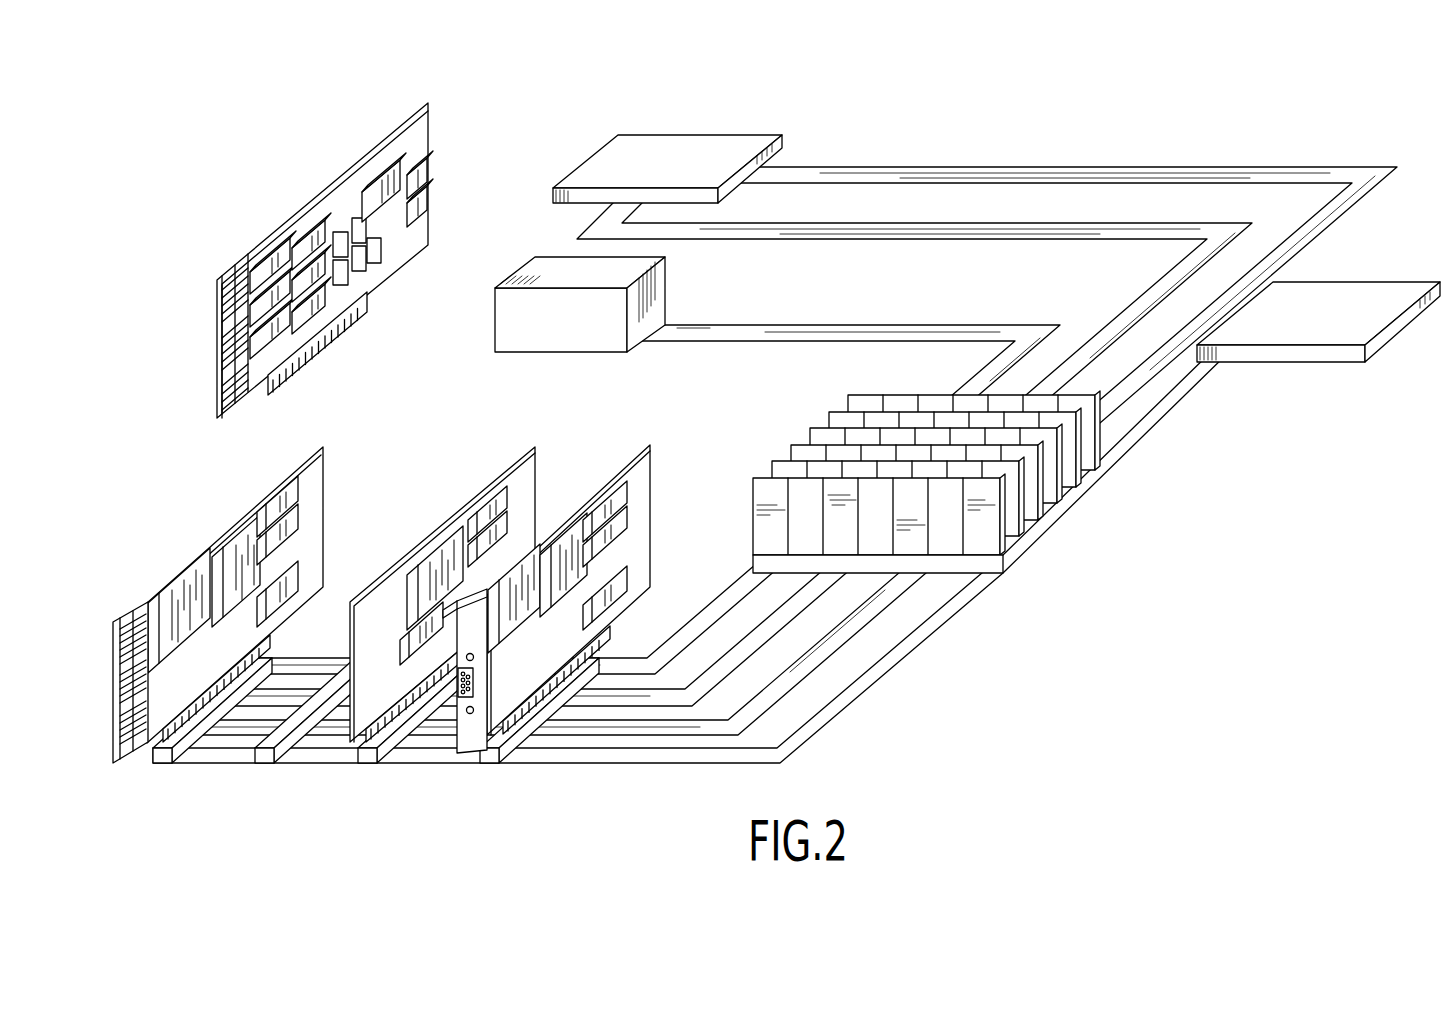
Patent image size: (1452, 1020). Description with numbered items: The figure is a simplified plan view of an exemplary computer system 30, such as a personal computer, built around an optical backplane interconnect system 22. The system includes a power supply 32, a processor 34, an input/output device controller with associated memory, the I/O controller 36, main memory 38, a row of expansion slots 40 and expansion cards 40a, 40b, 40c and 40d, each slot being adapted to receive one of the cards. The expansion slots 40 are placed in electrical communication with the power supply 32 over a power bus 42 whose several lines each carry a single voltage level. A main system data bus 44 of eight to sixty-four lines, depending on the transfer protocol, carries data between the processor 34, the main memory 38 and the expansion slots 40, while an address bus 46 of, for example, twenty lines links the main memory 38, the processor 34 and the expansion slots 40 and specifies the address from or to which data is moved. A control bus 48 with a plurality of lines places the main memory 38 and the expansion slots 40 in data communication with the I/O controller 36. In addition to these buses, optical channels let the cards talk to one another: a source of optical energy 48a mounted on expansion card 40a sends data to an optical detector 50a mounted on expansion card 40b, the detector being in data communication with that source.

The computer system chassis assembly 22 is at (358, 427).
The computer system 30 is at (1200, 135).
The power supply 32 is at (522, 268).
The processor 34 is at (621, 140).
The I/O controller 36 is at (1300, 352).
The main memory 38 is at (862, 380).
The expansion slots 40 is at (162, 765).
The expansion card 40a is at (215, 535).
The expansion card 40b is at (305, 197).
The expansion card 40c is at (508, 462).
The expansion card 40d is at (618, 460).
The power bus 42 is at (702, 338).
The main system data bus 44 is at (873, 232).
The address bus 46 is at (920, 173).
The control bus 48 is at (887, 650).
The source of optical energy 48a is at (140, 600).
The optical detector 50a is at (222, 350).